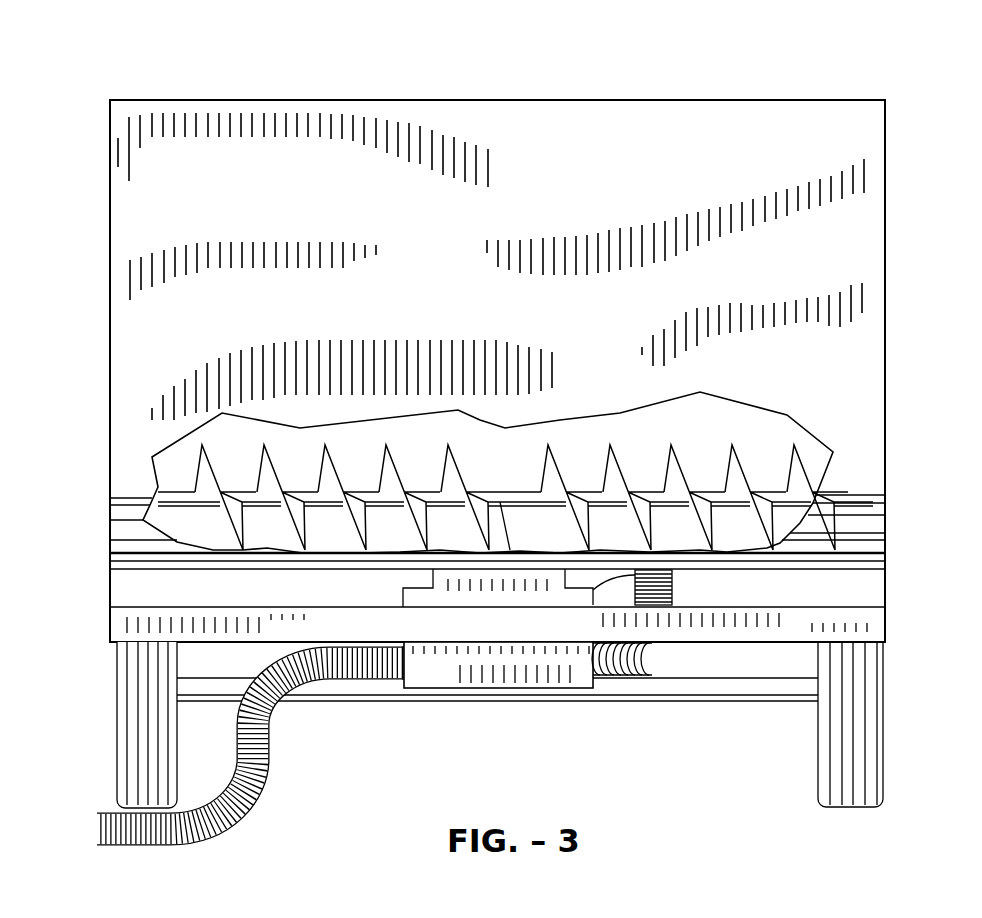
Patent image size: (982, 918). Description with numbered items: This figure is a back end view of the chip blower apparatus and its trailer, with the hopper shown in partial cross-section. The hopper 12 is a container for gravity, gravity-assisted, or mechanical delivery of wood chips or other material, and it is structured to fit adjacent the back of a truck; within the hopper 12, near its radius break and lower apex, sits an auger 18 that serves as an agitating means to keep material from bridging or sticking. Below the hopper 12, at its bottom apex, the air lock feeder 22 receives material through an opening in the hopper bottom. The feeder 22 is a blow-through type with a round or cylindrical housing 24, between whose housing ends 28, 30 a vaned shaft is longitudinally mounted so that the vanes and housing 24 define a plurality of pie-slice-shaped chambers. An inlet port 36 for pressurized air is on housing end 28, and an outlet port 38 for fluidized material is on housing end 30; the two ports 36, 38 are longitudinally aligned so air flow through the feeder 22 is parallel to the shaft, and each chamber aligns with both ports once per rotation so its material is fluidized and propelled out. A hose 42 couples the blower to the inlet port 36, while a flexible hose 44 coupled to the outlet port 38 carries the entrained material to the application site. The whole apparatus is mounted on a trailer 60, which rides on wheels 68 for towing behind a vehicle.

The hopper 12 is at (837, 130).
The auger 18 is at (790, 478).
The air lock feeder 22 is at (521, 690).
The housing 24 is at (438, 673).
The housing end 28 is at (672, 575).
The housing end 30 is at (402, 593).
The inlet port 36 is at (612, 682).
The outlet port 38 is at (383, 677).
The hose 42 is at (653, 655).
The hose 44 is at (197, 820).
The trailer 60 is at (878, 618).
The wheels 68 is at (915, 816).